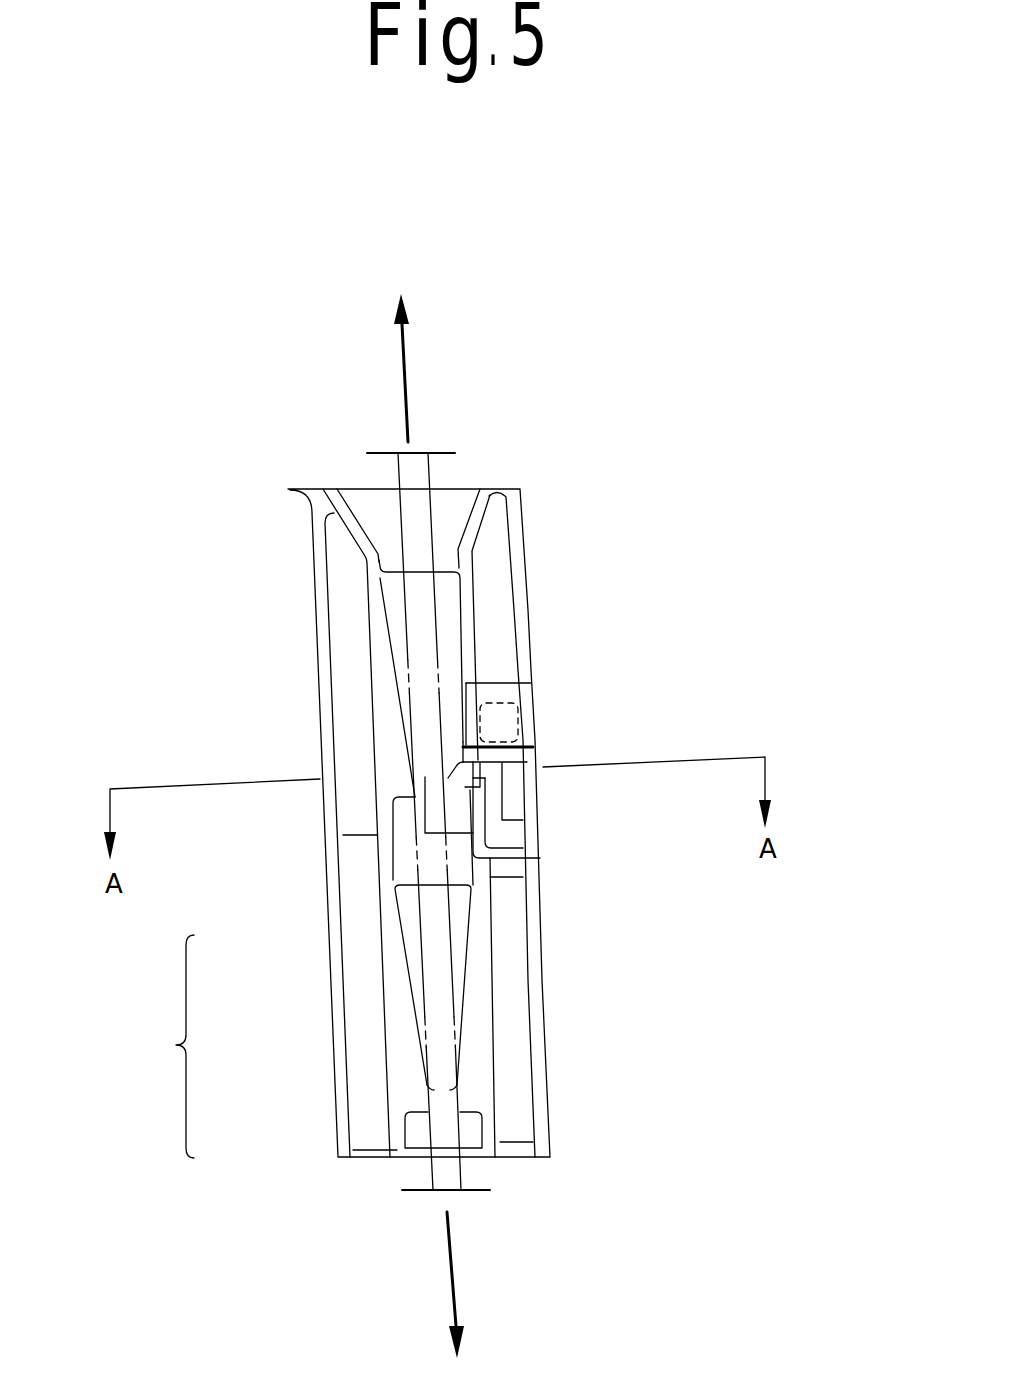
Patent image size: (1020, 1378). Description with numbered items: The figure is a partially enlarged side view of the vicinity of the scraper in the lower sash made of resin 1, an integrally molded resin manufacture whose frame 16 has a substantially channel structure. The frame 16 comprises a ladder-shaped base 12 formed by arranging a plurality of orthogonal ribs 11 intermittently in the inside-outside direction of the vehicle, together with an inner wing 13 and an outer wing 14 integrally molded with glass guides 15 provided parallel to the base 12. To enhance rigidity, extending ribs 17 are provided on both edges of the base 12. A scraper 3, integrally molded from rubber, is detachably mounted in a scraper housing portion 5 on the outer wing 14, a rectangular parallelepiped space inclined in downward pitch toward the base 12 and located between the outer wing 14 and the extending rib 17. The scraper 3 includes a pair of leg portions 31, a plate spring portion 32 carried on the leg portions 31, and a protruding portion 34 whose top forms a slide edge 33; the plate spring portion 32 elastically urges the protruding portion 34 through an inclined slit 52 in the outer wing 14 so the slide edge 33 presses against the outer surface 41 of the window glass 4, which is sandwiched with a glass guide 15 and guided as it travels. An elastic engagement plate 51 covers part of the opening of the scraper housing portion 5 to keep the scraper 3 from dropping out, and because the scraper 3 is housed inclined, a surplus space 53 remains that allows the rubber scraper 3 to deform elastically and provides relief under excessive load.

The lower sash made of resin 1 is at (305, 668).
The scraper 3 is at (513, 758).
The window glass 4 is at (414, 1171).
The scraper housing portion 5 is at (520, 686).
The orthogonal rib 11 is at (418, 876).
The base 12 is at (366, 973).
The inner wing 13 is at (487, 1125).
The outer wing 14 is at (397, 1127).
The glass guide 15 is at (395, 797).
The frame 16 is at (166, 1046).
The extending rib 17 is at (322, 607).
The leg portion 31 is at (525, 703).
The plate spring portion 32 is at (498, 802).
The slide edge 33 is at (470, 771).
The protruding portion 34 is at (470, 780).
The outer surface 41 is at (463, 1168).
The elastic engagement plate 51 is at (515, 703).
The slit 52 is at (465, 758).
The surplus space 53 is at (518, 800).